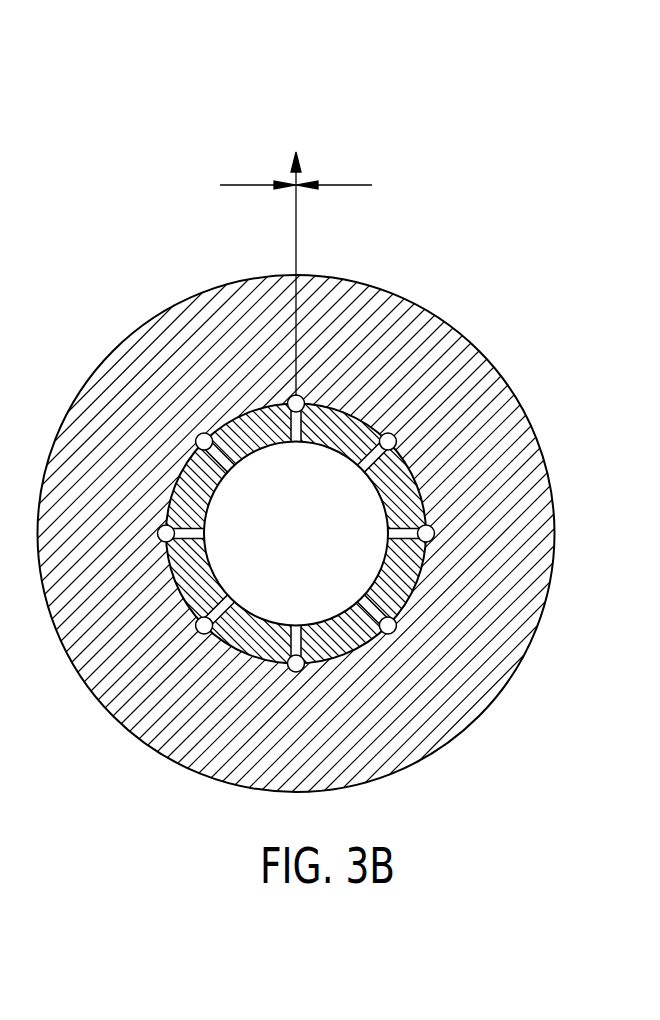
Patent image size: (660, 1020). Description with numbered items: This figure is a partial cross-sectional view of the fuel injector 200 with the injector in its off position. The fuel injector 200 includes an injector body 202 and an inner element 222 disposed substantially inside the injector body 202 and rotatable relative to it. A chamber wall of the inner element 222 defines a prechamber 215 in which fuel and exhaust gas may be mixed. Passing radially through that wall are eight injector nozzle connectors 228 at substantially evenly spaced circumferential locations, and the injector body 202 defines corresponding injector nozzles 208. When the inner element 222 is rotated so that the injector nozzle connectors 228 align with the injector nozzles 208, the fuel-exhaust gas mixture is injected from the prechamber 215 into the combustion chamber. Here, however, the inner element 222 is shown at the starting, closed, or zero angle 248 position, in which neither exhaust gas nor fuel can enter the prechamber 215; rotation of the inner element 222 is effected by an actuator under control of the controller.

The fuel injector 200 is at (328, 453).
The injector body 202 is at (449, 328).
The injector nozzle 208 is at (395, 627).
The prechamber 215 is at (311, 545).
The inner element 222 is at (414, 495).
The injector nozzle connector 228 is at (383, 605).
The zero angle 248 is at (342, 185).